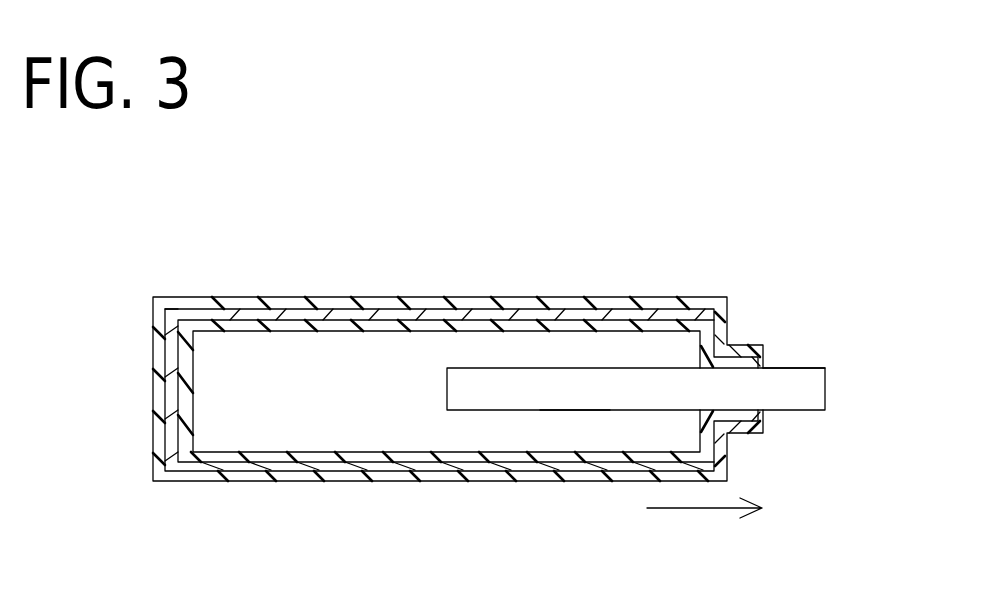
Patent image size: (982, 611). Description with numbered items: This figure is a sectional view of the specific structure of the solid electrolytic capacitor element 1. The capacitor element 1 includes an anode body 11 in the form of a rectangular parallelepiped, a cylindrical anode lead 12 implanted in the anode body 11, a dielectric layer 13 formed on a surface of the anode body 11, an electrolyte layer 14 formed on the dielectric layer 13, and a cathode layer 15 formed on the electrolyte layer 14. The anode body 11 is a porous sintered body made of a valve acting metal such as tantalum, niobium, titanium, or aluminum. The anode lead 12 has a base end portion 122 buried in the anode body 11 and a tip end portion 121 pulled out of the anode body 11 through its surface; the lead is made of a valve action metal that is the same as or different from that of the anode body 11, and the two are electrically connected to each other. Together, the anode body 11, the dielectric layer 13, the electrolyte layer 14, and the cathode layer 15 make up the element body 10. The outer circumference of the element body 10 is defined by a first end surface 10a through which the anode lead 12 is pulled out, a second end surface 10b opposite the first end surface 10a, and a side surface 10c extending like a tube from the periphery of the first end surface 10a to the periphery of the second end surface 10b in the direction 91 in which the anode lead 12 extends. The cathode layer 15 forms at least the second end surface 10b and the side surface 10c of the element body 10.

The solid electrolytic capacitor element 1 is at (512, 197).
The element body 10 is at (325, 296).
The first end surface 10a is at (731, 322).
The second end surface 10b is at (152, 390).
The side surface 10c is at (400, 483).
The anode body 11 is at (512, 348).
The anode lead 12 is at (535, 392).
The tip end portion 121 is at (806, 366).
The base end portion 122 is at (575, 412).
The dielectric layer 13 is at (578, 323).
The electrolyte layer 14 is at (628, 315).
The cathode layer 15 is at (657, 306).
The direction 91 is at (698, 509).